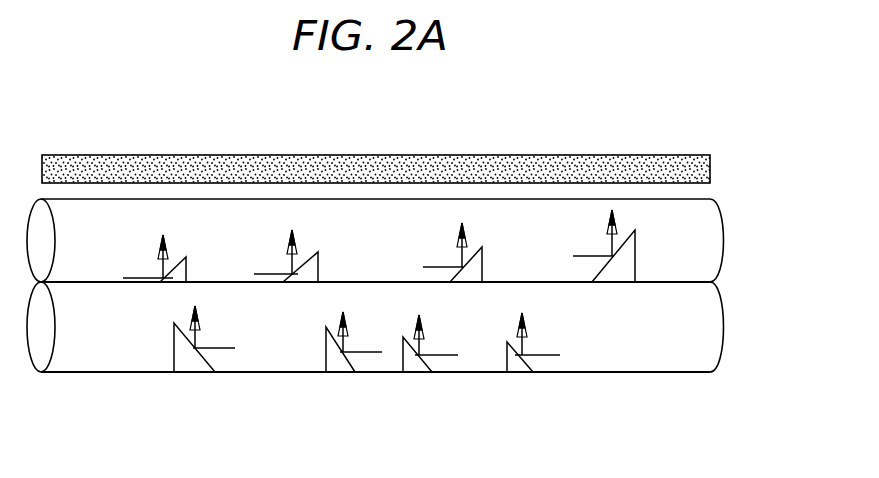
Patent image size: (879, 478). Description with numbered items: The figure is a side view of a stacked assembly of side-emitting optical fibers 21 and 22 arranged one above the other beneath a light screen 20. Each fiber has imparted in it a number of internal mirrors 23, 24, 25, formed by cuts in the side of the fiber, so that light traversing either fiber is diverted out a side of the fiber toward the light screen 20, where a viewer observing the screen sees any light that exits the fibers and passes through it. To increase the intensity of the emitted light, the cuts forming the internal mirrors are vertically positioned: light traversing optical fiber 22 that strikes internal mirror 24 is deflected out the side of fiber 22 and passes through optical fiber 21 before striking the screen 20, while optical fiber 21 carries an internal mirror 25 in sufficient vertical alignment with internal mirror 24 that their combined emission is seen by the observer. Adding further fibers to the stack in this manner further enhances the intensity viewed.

The light screen 20 is at (713, 167).
The optical fiber 21 is at (727, 252).
The optical fiber 22 is at (727, 327).
The internal mirror 23 is at (513, 362).
The internal mirror 24 is at (185, 362).
The internal mirror 25 is at (167, 276).